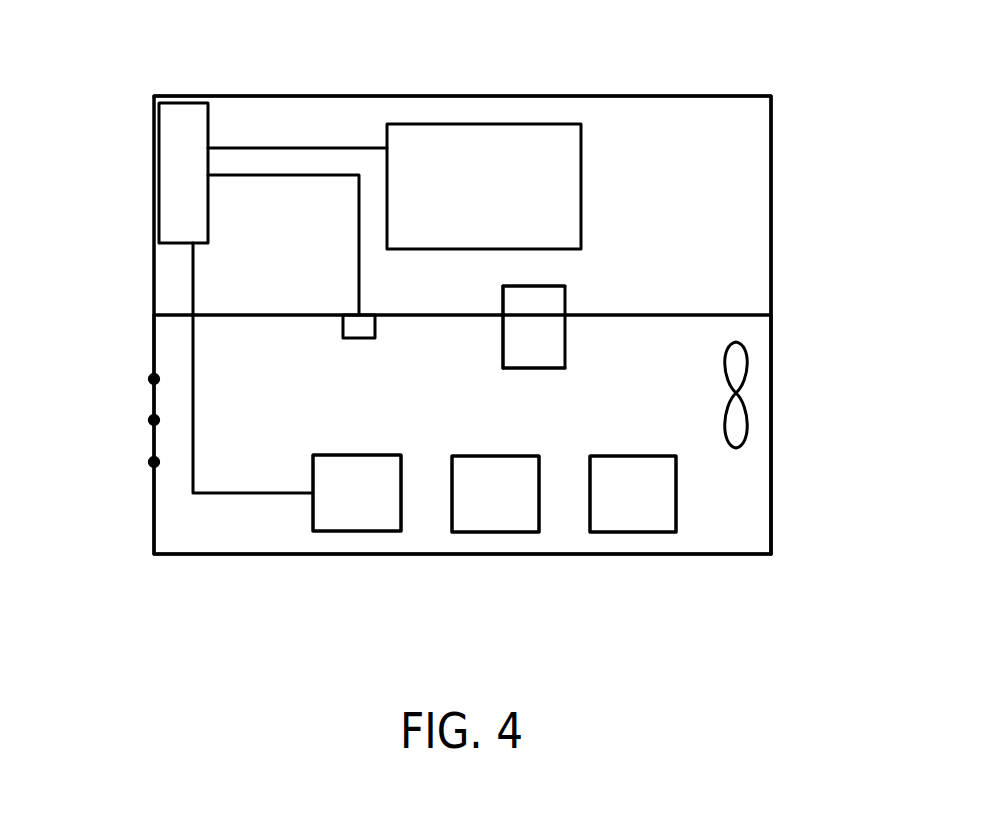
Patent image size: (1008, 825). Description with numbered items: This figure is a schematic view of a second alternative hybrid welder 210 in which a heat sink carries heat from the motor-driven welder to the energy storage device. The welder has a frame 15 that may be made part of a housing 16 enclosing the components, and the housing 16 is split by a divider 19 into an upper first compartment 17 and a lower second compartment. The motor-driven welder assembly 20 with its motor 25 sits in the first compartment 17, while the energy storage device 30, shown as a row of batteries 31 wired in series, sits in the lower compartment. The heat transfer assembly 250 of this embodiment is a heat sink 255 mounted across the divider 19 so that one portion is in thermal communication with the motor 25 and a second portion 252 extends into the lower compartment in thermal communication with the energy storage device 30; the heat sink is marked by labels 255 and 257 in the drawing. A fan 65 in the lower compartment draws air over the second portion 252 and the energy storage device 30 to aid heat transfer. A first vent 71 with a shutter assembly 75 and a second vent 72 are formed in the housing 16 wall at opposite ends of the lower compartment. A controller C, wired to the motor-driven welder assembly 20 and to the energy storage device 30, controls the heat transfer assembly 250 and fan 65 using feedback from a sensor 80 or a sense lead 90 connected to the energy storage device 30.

The hybrid welder 210 is at (184, 80).
The frame 15 is at (775, 112).
The housing 16 is at (772, 147).
The first compartment 17 is at (703, 100).
The divider 19 is at (712, 314).
The second vent 72 is at (778, 360).
The controller C is at (208, 128).
The motor 25 is at (400, 127).
The motor-driven welder assembly 20 is at (523, 122).
The sensor 80 is at (358, 338).
The sense lead 90 is at (193, 373).
The heat transfer assembly 250 is at (580, 300).
The heat sink 255 is at (503, 298).
The heat sink top portion 257 is at (548, 286).
The second portion 252 is at (535, 368).
The energy storage device 30 is at (632, 535).
The batteries 31 is at (345, 504).
The fan 65 is at (737, 452).
The first vent 71 is at (147, 374).
The shutter assembly 75 is at (147, 422).